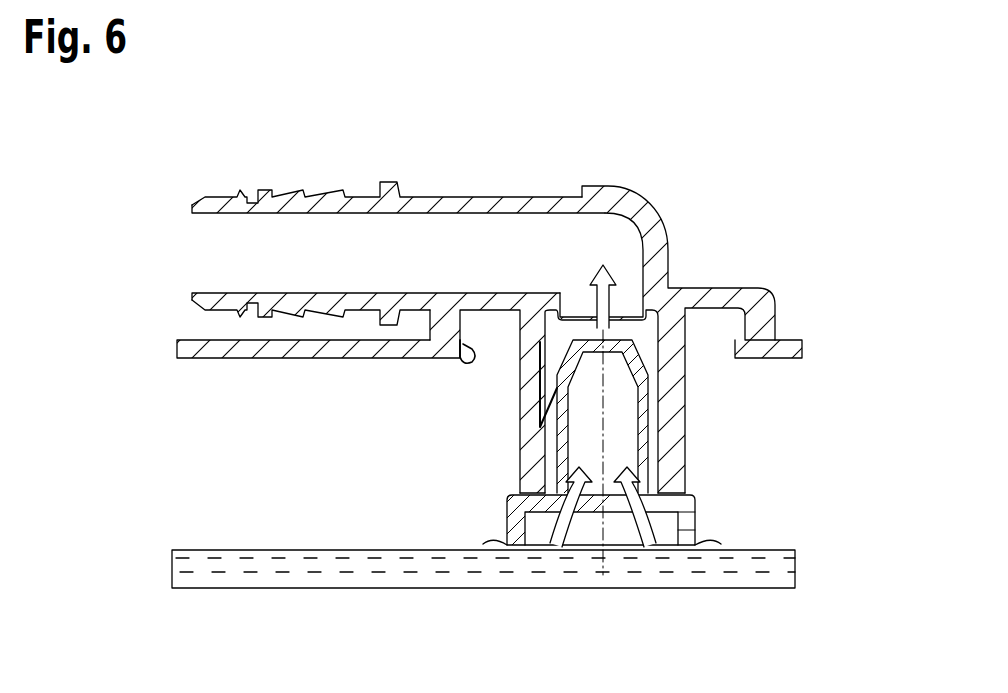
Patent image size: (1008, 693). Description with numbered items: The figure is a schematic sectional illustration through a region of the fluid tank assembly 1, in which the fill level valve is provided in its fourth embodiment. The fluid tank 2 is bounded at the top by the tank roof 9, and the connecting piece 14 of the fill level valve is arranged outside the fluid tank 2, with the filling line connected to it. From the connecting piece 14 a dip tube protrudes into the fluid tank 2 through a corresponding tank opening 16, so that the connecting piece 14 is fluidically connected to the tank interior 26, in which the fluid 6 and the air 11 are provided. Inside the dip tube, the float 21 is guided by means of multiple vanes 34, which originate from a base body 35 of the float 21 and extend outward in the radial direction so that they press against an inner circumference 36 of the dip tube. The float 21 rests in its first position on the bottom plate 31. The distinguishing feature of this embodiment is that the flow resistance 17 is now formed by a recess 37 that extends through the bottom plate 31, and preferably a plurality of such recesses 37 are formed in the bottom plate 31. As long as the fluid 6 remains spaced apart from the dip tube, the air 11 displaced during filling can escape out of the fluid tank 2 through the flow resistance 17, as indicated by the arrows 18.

The fluid tank assembly 1 is at (728, 135).
The fluid tank 2 is at (808, 320).
The fluid 6 is at (295, 576).
The tank roof 9 is at (240, 346).
The air 11 is at (396, 483).
The connecting piece 14 is at (253, 198).
The tank opening 16 is at (463, 360).
The flow resistance 17 is at (657, 486).
The arrows 18 is at (612, 262).
The float 21 is at (660, 386).
The tank interior 26 is at (323, 430).
The bottom plate 31 is at (562, 530).
The vanes 34 is at (550, 450).
The base body 35 is at (642, 410).
The inner circumference 36 is at (547, 397).
The recess 37 is at (645, 530).